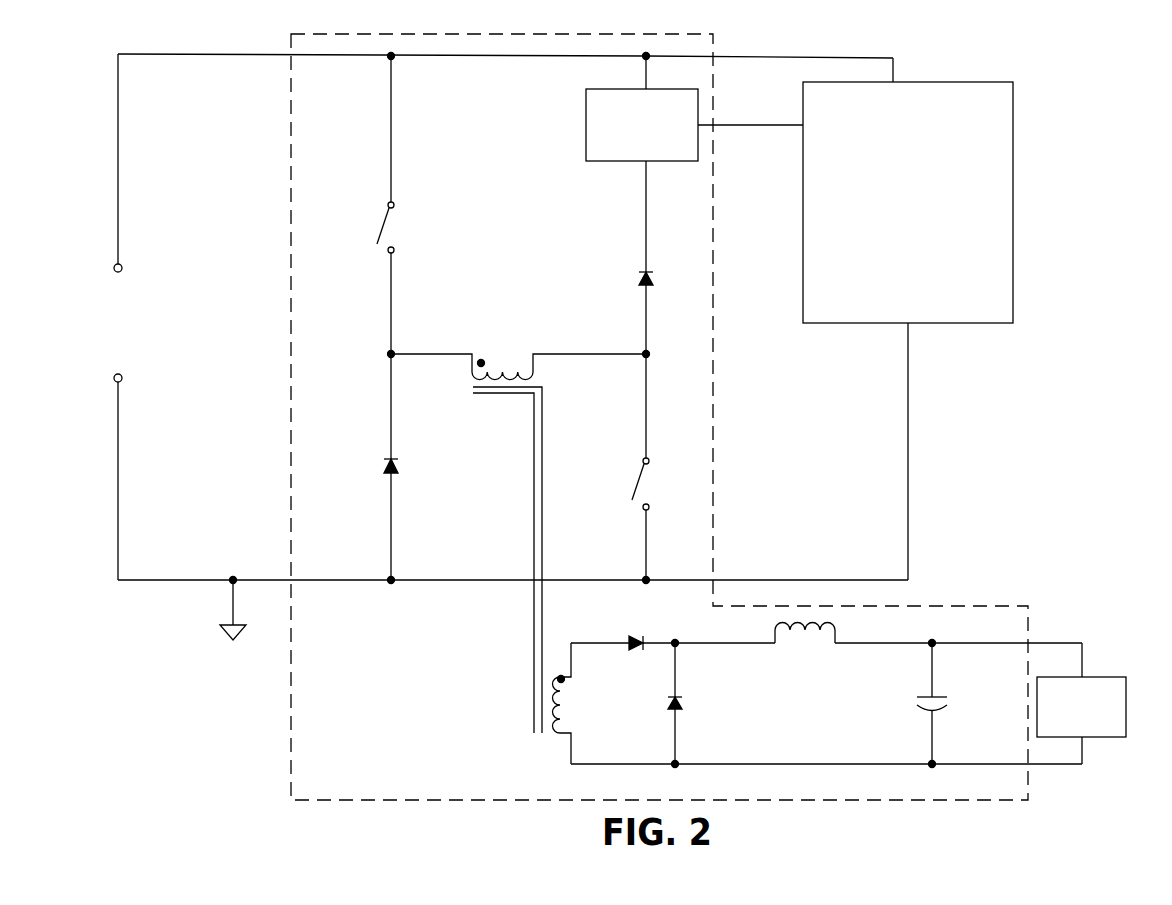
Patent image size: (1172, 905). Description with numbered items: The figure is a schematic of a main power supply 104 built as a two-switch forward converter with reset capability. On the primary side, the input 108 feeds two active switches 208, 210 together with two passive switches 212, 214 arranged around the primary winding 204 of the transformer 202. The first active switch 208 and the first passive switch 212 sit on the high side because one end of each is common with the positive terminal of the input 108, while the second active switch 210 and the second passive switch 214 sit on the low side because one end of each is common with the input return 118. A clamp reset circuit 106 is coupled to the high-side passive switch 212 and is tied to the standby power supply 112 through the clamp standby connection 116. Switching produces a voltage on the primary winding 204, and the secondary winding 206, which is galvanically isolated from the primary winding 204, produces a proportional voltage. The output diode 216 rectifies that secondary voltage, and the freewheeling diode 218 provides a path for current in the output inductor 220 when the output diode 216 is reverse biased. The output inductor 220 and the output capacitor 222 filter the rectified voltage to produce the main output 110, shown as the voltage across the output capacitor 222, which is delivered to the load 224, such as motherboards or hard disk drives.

The main power supply 104 is at (272, 134).
The clamp reset circuit 106 is at (580, 120).
The input 108 is at (136, 309).
The main output 110 is at (980, 691).
The standby power supply 112 is at (957, 76).
The clamp standby connection 116 is at (743, 134).
The input return 118 is at (220, 612).
The transformer T1 202 is at (530, 442).
The primary winding 204 is at (500, 338).
The secondary winding 206 is at (573, 700).
The active switch S1 208 is at (373, 214).
The active switch S2 210 is at (630, 468).
The passive switch D1 212 is at (655, 290).
The passive switch D2 214 is at (380, 478).
The output diode D3 216 is at (627, 633).
The freewheeling diode D4 218 is at (700, 712).
The output inductor L1 220 is at (800, 664).
The output capacitor C1 222 is at (920, 691).
The load 224 is at (1103, 673).